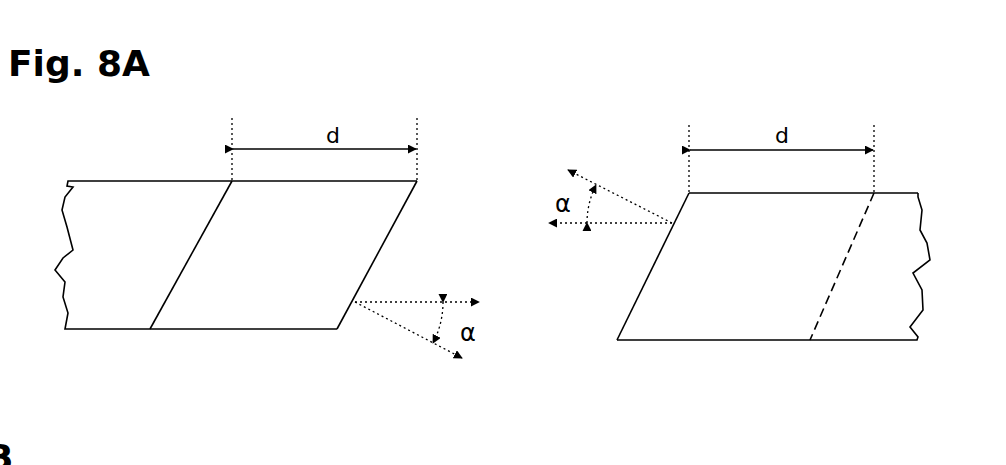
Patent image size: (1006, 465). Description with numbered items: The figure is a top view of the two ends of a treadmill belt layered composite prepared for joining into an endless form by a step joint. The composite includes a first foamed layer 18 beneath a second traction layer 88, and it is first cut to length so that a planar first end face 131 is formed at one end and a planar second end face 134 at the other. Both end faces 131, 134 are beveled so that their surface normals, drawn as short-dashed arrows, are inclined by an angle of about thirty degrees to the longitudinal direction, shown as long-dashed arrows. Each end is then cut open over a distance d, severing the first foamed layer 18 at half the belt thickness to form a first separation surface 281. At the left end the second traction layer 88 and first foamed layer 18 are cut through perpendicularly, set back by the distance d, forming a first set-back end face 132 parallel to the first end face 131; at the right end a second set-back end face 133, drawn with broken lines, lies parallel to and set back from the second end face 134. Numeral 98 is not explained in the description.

The first foamed layer 18 is at (255, 303).
The second traction layer 88 is at (165, 210).
The strip material 98 is at (86, 197).
The first end face 131 is at (406, 212).
The first set-back end face 132 is at (190, 268).
The second set-back end face 133 is at (841, 265).
The second end face 134 is at (637, 293).
The first separation surface 281 is at (292, 281).